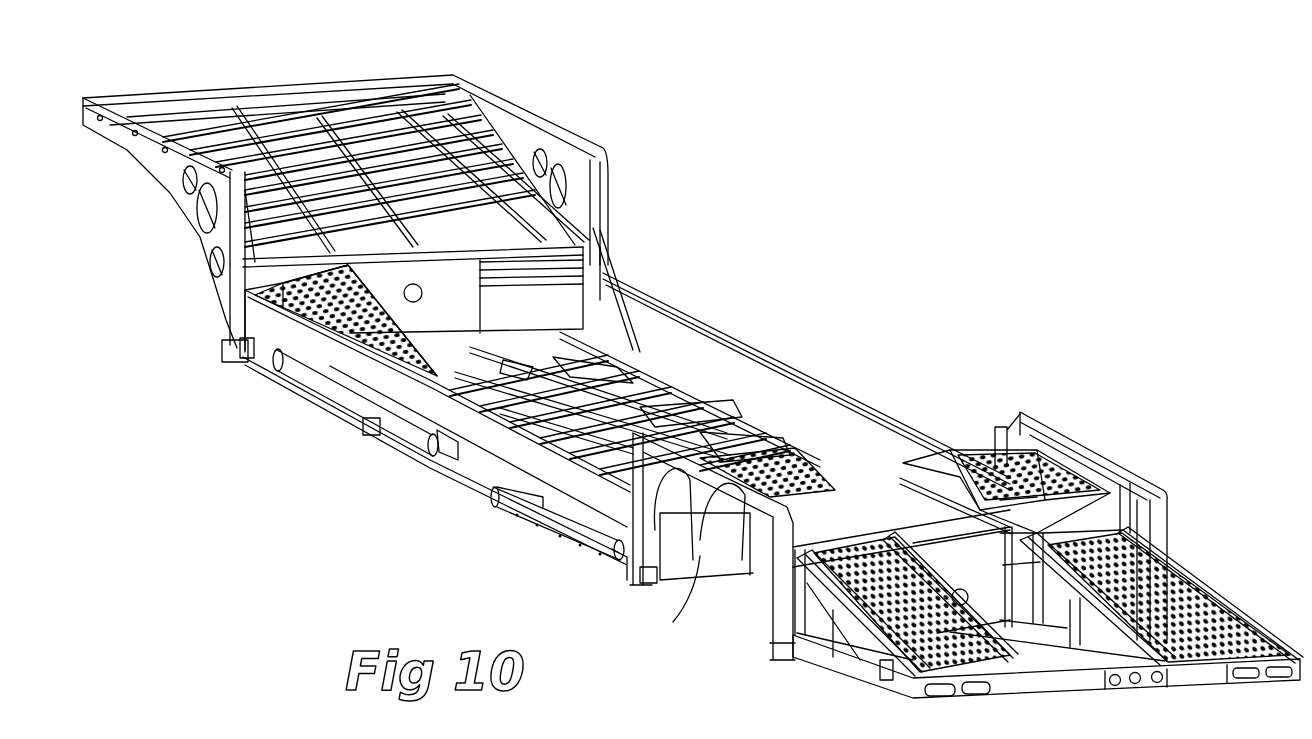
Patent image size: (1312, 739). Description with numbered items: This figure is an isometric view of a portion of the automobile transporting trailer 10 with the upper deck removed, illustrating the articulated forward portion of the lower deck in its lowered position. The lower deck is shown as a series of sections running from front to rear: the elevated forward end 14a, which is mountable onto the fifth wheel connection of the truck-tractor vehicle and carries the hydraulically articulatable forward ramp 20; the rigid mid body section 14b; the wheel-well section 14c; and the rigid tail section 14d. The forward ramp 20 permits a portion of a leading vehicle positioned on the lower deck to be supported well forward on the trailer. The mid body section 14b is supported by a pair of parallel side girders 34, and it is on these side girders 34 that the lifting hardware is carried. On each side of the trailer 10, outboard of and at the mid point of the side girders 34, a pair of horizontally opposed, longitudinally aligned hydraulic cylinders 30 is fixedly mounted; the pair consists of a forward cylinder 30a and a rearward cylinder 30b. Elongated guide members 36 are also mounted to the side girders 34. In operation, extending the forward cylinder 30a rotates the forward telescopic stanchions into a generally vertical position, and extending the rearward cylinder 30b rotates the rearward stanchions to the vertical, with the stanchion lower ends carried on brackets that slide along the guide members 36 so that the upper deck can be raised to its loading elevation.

The automobile transporting trailer 10 is at (695, 143).
The forward ramp 20 is at (365, 128).
The forward end 14a is at (157, 150).
The mid body section 14b is at (667, 355).
The wheel-well section 14c is at (703, 545).
The tail section 14d is at (867, 612).
The hydraulic cylinders 30 is at (488, 478).
The forward cylinder 30a is at (293, 365).
The rearward cylinder 30b is at (537, 490).
The side girders 34 is at (750, 365).
The guide members 36 is at (262, 371).